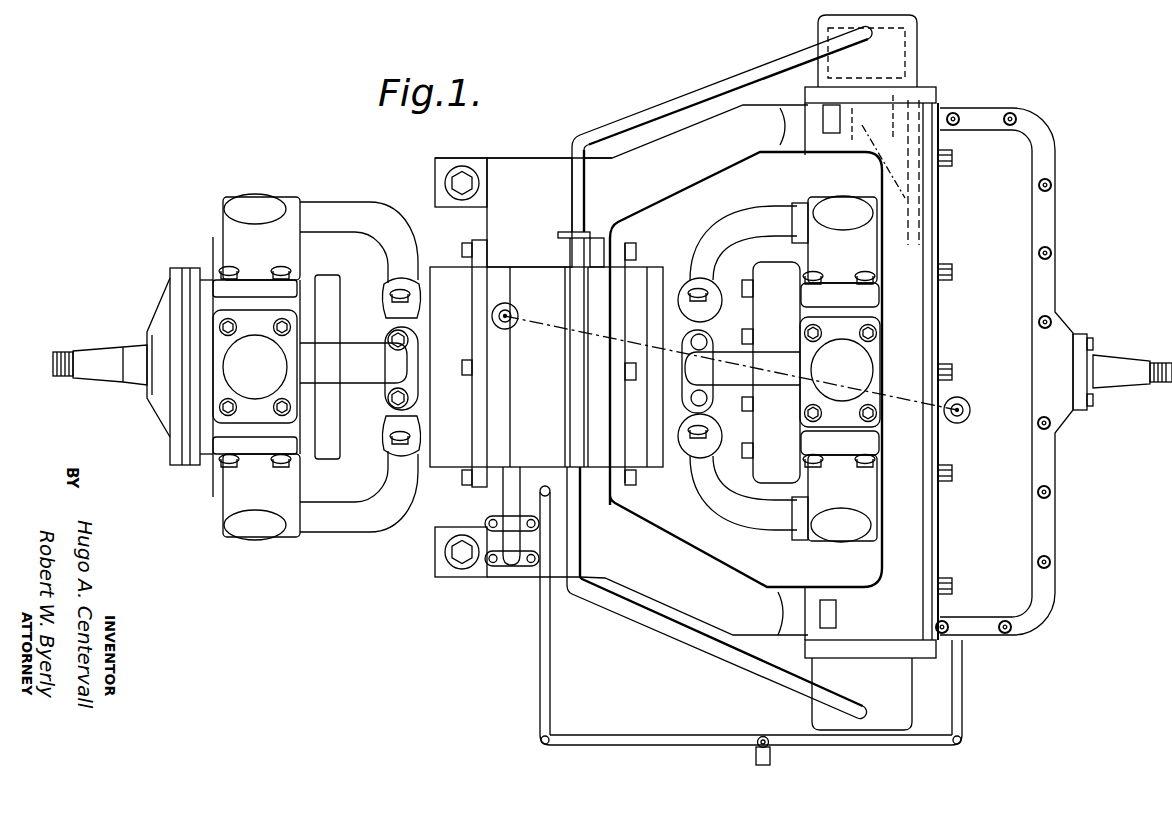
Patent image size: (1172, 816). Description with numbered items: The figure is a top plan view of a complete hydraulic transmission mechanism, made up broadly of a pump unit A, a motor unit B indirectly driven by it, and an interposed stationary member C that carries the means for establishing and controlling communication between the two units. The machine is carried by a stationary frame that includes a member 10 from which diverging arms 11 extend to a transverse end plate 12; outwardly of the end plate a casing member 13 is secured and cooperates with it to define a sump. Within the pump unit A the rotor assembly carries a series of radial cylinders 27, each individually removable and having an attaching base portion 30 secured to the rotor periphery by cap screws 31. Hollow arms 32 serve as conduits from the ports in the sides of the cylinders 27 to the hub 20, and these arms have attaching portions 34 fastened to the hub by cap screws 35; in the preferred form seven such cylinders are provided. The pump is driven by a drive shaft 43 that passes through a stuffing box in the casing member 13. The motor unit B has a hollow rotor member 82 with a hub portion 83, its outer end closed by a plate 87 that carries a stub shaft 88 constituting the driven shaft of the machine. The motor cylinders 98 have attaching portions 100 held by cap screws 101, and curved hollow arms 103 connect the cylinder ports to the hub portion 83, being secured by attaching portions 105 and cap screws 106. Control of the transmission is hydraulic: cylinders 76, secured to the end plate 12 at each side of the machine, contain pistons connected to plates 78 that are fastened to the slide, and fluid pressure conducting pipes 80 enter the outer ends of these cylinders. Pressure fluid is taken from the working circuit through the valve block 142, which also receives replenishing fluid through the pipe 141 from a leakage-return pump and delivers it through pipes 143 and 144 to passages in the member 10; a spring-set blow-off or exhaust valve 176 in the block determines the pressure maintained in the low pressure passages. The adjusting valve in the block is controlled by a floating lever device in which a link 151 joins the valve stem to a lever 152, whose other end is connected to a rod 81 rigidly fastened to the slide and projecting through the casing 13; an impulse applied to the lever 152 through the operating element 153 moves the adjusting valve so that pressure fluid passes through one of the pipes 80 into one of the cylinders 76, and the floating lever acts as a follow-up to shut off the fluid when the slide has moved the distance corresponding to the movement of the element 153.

The frame member 10 is at (511, 269).
The diverging arms 11 is at (741, 113).
The end plate 12 is at (897, 318).
The casing member 13 is at (1013, 313).
The hub 20 is at (730, 430).
The radial cylinders 27 is at (849, 206).
The attaching base portions 30 is at (868, 297).
The cap screws 31 is at (863, 277).
The hollow arms 32 is at (767, 218).
The attaching portions 34 is at (686, 284).
The cap screws 35 is at (703, 314).
The drive shaft 43 is at (1128, 350).
The cylinders 76 is at (917, 34).
The plates 78 is at (940, 104).
The fluid pressure conducting pipes 80 is at (700, 77).
The rod 81 is at (963, 658).
The hollow rotor member 82 is at (213, 260).
The hub portion 83 is at (361, 429).
The plate 87 is at (161, 432).
The stub shaft 88 is at (106, 335).
The cylinders 98 is at (247, 553).
The attaching portions 100 is at (223, 288).
The cap screws 101 is at (277, 402).
The curved hollow arms 103 is at (373, 249).
The attaching portions 105 is at (421, 349).
The cap screws 106 is at (420, 326).
The pipe 141 is at (514, 311).
The valve block 142 is at (546, 363).
The pipe 143 is at (510, 571).
The pipe 144 is at (487, 515).
The link 151 is at (540, 637).
The lever 152 is at (704, 740).
The operating element 153 is at (773, 757).
The blow-off or exhaust valve 176 is at (592, 234).
The pump unit A is at (1063, 268).
The motor unit B is at (146, 416).
The interposed stationary member C is at (546, 133).